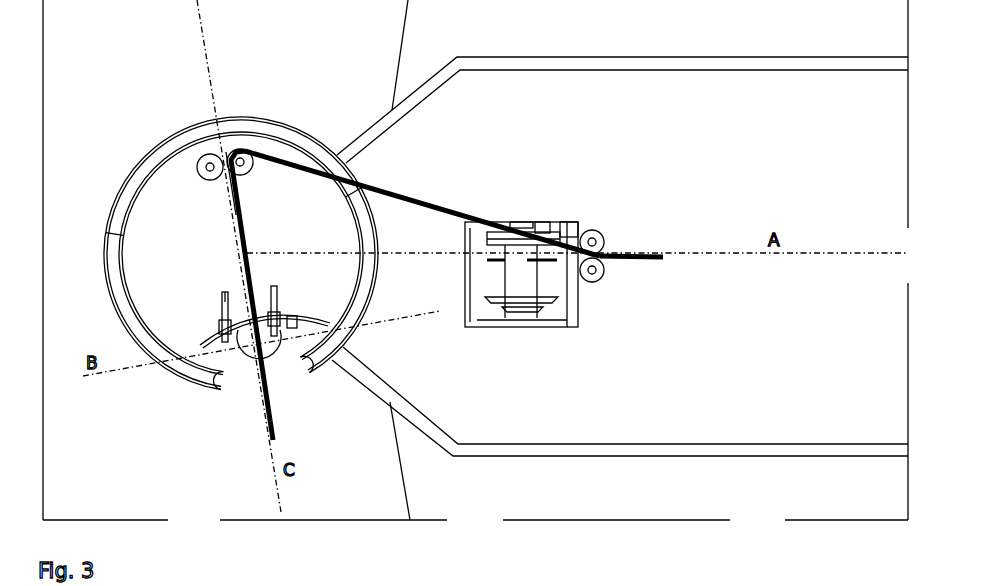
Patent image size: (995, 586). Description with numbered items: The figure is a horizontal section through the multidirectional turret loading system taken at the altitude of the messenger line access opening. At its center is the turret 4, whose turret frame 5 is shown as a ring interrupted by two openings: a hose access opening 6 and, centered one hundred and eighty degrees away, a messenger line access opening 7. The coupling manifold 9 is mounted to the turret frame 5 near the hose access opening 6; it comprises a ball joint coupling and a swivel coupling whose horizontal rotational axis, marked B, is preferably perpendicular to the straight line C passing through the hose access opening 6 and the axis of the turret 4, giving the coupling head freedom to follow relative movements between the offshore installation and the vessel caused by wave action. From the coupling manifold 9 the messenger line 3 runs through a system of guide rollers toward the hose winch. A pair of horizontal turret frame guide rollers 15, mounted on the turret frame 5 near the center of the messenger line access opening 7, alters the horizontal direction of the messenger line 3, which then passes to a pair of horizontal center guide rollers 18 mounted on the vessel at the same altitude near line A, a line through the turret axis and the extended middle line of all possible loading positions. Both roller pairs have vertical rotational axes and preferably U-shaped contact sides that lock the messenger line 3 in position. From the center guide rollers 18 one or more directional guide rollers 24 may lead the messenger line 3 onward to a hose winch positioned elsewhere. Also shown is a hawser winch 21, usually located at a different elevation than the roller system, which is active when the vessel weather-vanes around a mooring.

The messenger line 3 is at (365, 170).
The turret 4 is at (168, 182).
The turret frame 5 is at (115, 256).
The hose access opening 6 is at (242, 396).
The messenger line access opening 7 is at (238, 119).
The coupling manifold 9 is at (238, 356).
The turret frame guide rollers 15 is at (203, 144).
The center guide rollers 18 is at (606, 222).
The hawser winch 21 is at (521, 263).
The directional guide rollers 24 is at (638, 235).